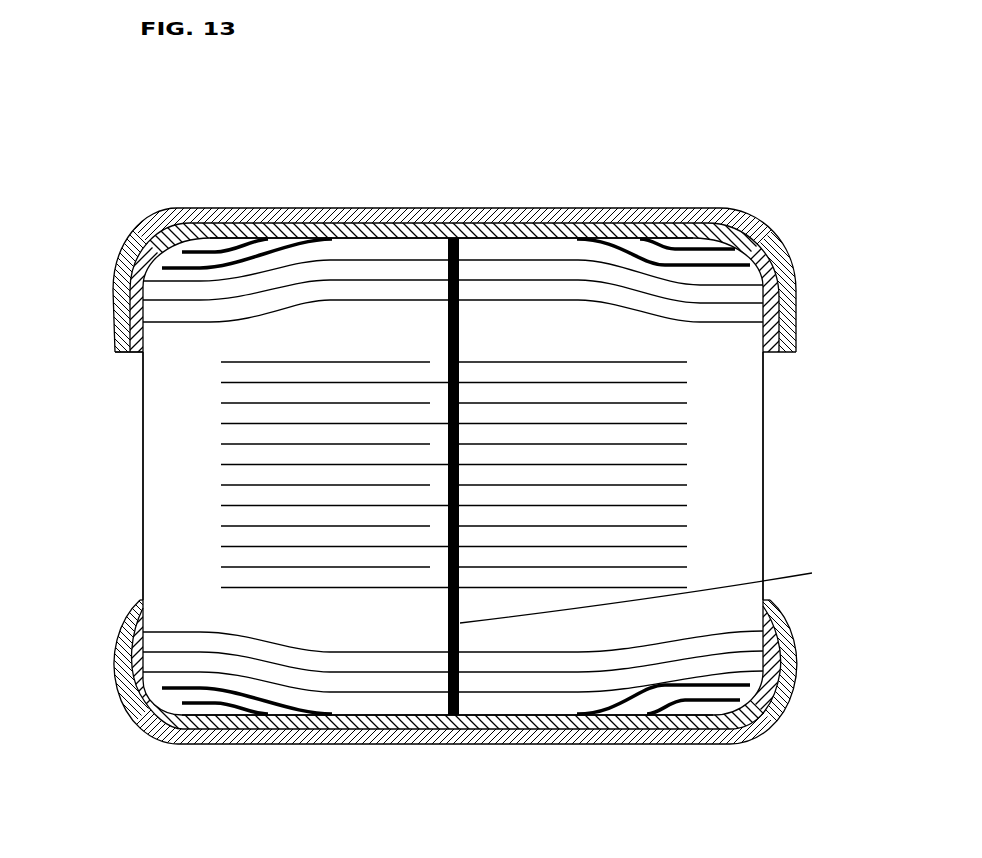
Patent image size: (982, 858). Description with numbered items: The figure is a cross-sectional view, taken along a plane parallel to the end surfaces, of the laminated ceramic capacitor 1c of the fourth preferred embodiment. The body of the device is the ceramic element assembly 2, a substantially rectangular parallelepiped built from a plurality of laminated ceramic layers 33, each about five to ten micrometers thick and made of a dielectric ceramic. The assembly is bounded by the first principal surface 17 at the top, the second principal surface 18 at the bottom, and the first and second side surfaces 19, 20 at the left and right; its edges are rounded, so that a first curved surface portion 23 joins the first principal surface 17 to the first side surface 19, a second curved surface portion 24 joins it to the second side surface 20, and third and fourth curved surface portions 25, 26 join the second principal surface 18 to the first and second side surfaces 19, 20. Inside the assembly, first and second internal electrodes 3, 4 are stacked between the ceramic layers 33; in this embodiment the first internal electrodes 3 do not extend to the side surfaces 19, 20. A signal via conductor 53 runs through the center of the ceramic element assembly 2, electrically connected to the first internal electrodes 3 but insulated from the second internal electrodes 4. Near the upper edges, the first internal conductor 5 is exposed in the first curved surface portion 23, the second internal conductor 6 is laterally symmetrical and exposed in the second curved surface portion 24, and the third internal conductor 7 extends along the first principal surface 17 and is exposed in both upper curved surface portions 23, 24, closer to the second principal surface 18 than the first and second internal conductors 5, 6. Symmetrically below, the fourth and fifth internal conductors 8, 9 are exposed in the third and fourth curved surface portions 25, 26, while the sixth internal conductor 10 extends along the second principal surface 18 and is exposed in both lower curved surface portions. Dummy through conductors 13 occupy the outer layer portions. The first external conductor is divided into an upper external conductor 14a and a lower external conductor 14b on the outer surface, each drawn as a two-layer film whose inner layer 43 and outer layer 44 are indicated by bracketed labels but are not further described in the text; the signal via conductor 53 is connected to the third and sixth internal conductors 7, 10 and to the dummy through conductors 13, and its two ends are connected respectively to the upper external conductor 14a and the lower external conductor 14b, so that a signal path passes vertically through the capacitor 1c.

The laminated ceramic capacitor 1c is at (206, 85).
The ceramic element assembly 2 is at (769, 369).
The first internal electrodes 3 is at (398, 590).
The second internal electrodes 4 is at (421, 570).
The first internal conductor 5 is at (226, 252).
The second internal conductor 6 is at (687, 248).
The third internal conductor 7 is at (200, 268).
The fourth internal conductor 8 is at (222, 703).
The fifth internal conductor 9 is at (682, 700).
The sixth internal conductor 10 is at (176, 686).
The dummy through conductors 13 is at (178, 632).
The upper external conductor 14a is at (512, 92).
The lower external conductor 14b is at (563, 768).
The first principal surface 17 is at (293, 232).
The second principal surface 18 is at (295, 714).
The first side surface 19 is at (143, 406).
The second side surface 20 is at (765, 410).
The first curved surface portion 23 is at (125, 248).
The second curved surface portion 24 is at (738, 243).
The third curved surface portion 25 is at (178, 688).
The fourth curved surface portion 26 is at (766, 698).
The ceramic layers 33 is at (680, 476).
The inner resin layer 43 is at (593, 223).
The outer metal layer 44 is at (618, 208).
The signal via conductor 53 is at (643, 476).